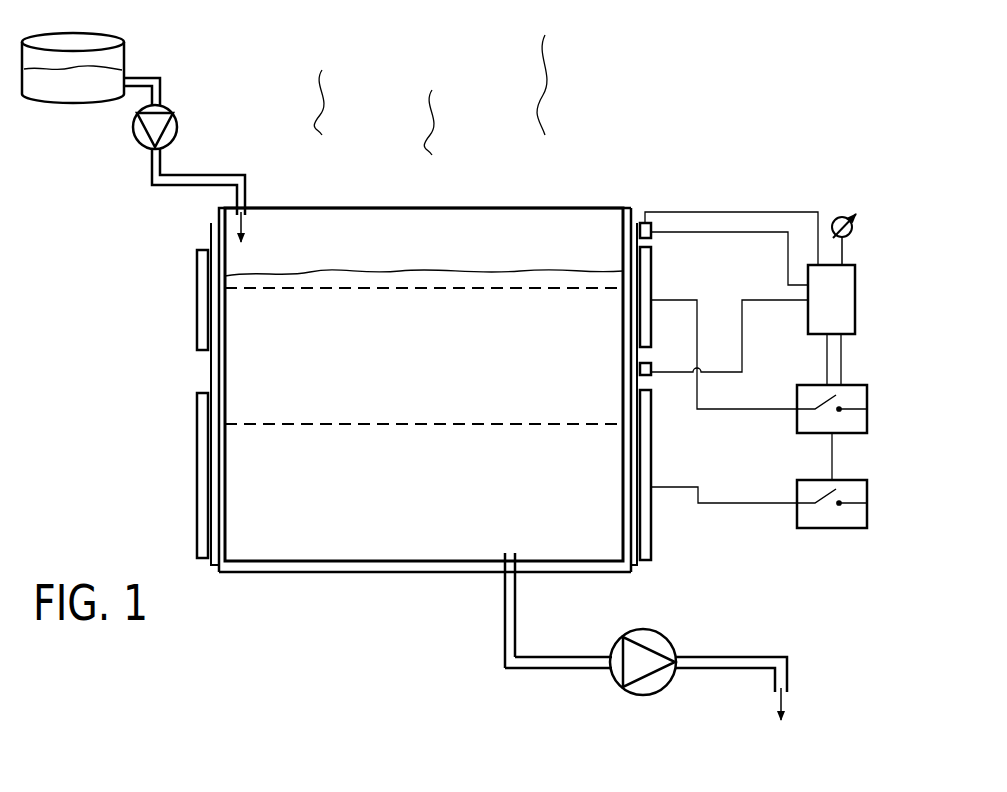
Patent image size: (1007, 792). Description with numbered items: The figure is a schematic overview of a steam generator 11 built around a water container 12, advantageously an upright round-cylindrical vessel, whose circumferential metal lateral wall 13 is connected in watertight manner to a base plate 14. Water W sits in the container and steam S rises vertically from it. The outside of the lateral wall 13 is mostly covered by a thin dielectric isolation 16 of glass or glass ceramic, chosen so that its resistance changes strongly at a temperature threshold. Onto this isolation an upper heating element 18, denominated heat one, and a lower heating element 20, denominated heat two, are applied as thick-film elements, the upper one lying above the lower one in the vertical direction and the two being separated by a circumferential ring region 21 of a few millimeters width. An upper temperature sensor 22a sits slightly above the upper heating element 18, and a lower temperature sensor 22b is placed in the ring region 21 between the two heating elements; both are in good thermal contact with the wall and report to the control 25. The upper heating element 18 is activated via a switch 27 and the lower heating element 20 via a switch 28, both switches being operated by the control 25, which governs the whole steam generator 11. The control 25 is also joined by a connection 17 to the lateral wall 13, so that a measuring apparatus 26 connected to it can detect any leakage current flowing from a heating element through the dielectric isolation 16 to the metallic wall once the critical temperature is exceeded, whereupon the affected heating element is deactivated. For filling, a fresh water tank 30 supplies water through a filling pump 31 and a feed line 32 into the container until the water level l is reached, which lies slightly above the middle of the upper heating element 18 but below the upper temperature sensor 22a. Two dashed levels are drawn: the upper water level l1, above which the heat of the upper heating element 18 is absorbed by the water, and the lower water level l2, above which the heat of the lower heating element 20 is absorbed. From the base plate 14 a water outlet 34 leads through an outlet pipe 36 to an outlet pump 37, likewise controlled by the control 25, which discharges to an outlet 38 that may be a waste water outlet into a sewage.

The steam generator 11 is at (771, 84).
The water container 12 is at (583, 178).
The lateral wall 13 is at (616, 214).
The base plate 14 is at (338, 573).
The dielectric isolation 16 is at (209, 239).
The connection 17 is at (636, 210).
The upper heating element 18 is at (197, 270).
The lower heating element 20 is at (197, 430).
The ring region 21 is at (195, 372).
The upper temperature sensor 22a is at (656, 222).
The lower temperature sensor 22b is at (652, 382).
The control 25 is at (857, 282).
The measuring apparatus 26 is at (856, 186).
The switch 27 is at (797, 398).
The switch 28 is at (797, 517).
The fresh water tank 30 is at (122, 32).
The filling pump 31 is at (168, 108).
The supply line 32 is at (197, 176).
The water outlet 34 is at (503, 583).
The outlet pipe 36 is at (540, 669).
The outlet pump 37 is at (637, 696).
The outlet 38 is at (790, 661).
The water W is at (42, 83).
The steam S is at (563, 78).
The water level l is at (455, 270).
The upper water level l1 is at (352, 290).
The lower water level l2 is at (466, 427).